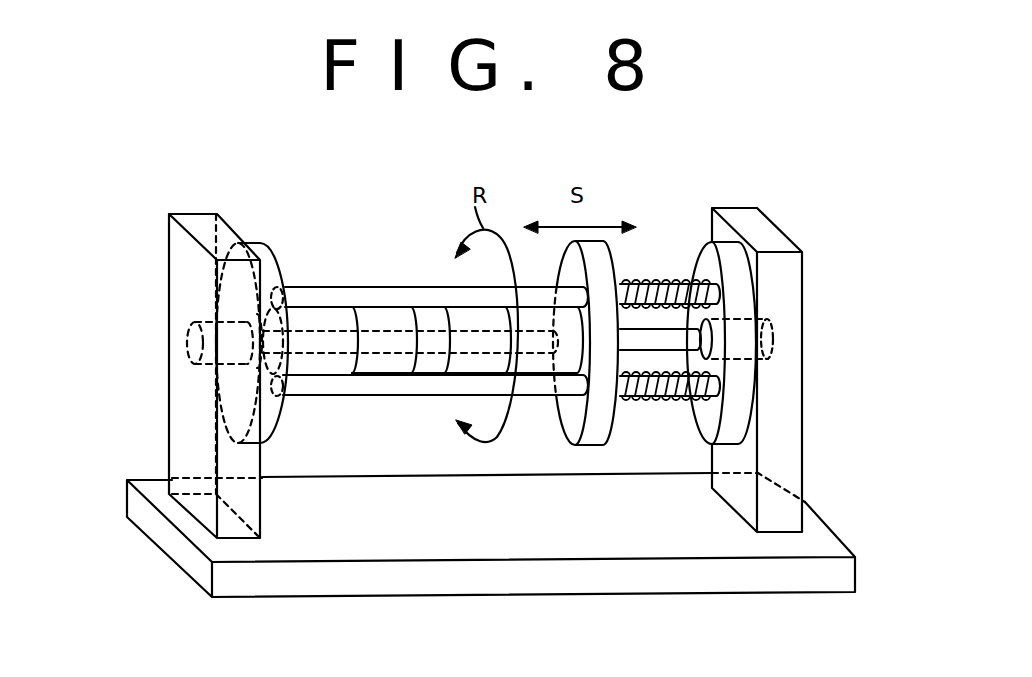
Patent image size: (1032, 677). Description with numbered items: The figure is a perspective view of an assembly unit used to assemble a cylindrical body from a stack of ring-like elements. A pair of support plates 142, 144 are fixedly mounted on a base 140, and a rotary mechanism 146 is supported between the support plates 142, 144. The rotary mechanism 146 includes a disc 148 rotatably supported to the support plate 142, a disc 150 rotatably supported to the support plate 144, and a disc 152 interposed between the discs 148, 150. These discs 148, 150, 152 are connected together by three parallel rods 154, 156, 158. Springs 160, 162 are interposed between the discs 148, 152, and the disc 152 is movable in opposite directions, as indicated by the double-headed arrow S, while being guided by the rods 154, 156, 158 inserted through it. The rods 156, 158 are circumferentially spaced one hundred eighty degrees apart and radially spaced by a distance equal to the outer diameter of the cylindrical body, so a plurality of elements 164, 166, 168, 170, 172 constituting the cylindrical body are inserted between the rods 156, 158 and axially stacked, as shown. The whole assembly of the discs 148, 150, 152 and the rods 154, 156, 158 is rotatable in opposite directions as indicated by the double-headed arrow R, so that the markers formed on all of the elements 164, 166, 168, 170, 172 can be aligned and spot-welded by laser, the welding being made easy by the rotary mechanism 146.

The base 140 is at (493, 549).
The support plate 142 is at (797, 303).
The support plate 144 is at (172, 313).
The rotary mechanism 146 is at (592, 450).
The disc 148 is at (718, 244).
The disc 150 is at (263, 243).
The disc 152 is at (597, 243).
The rod 154 is at (645, 343).
The rod 156 is at (318, 393).
The rod 158 is at (315, 290).
The spring 160 is at (677, 398).
The spring 162 is at (658, 280).
The element 164 is at (537, 368).
The element 166 is at (457, 320).
The element 168 is at (423, 368).
The element 170 is at (373, 318).
The element 172 is at (335, 370).